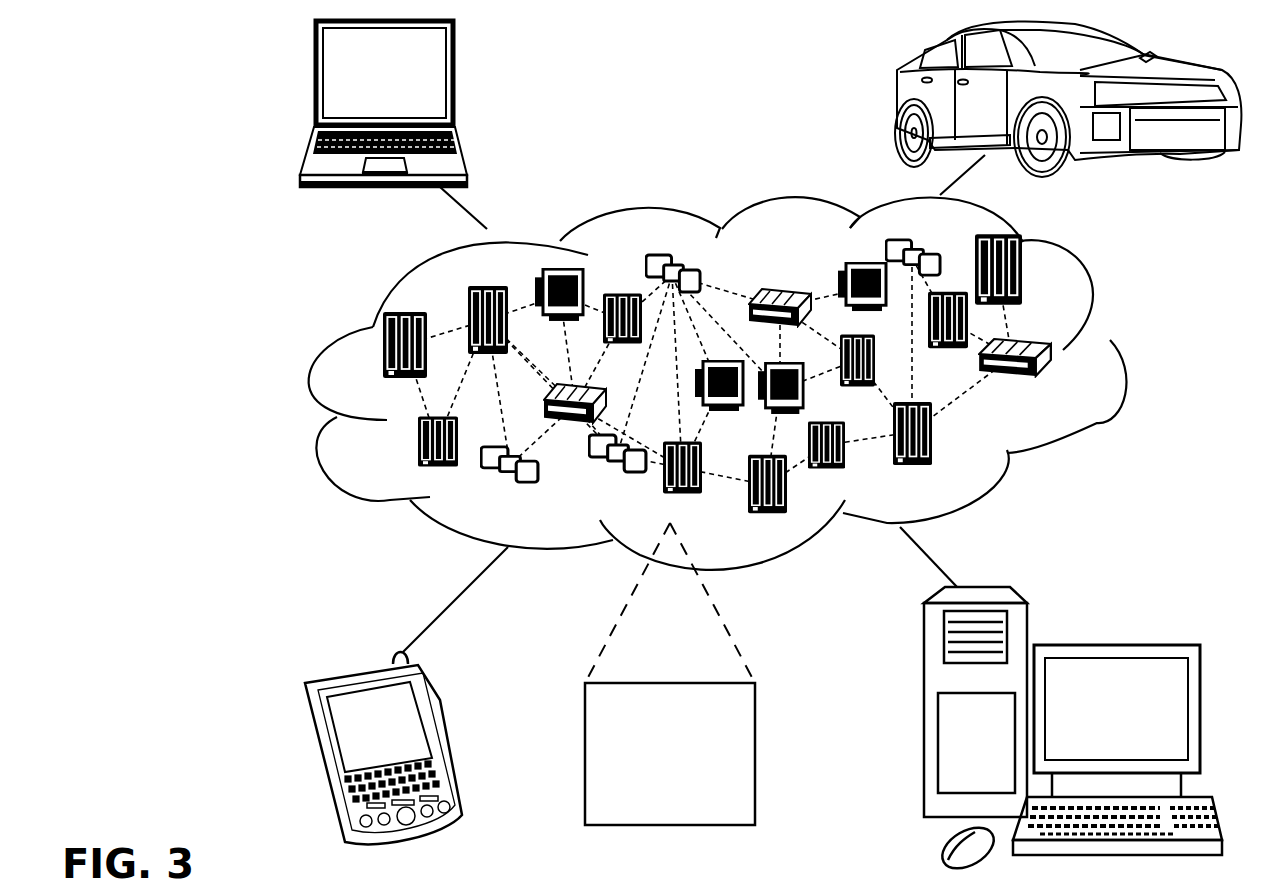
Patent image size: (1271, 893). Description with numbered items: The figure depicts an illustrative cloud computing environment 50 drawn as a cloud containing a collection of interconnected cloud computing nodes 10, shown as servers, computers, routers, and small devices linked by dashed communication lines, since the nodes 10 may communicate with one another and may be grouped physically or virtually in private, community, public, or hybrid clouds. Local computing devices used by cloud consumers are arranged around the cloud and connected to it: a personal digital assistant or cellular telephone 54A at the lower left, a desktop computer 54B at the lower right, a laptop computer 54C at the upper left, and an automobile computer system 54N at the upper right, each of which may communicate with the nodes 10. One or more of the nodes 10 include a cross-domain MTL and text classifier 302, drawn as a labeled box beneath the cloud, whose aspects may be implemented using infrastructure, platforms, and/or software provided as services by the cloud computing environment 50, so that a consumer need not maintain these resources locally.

The cloud computing nodes 10 is at (1068, 386).
The cloud computing environment 50 is at (1110, 352).
The personal digital assistant or cellular telephone 54A is at (443, 737).
The desktop computer 54B is at (1113, 645).
The laptop computer 54C is at (455, 80).
The automobile computer system 54N is at (895, 98).
The cross-domain MTL and text classifier 302 is at (755, 732).